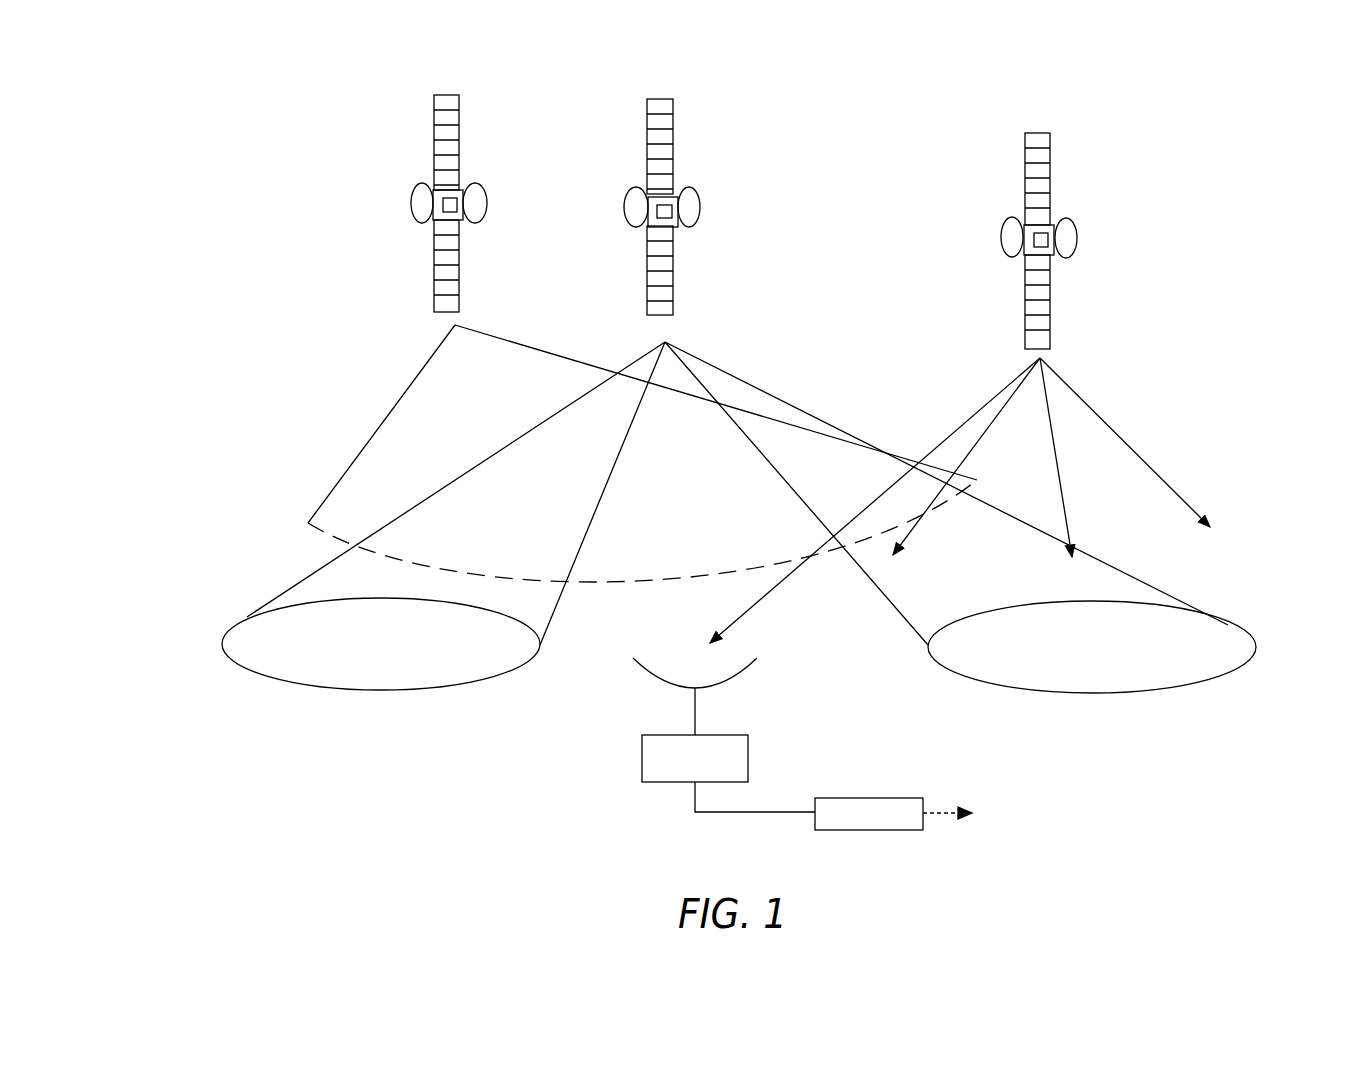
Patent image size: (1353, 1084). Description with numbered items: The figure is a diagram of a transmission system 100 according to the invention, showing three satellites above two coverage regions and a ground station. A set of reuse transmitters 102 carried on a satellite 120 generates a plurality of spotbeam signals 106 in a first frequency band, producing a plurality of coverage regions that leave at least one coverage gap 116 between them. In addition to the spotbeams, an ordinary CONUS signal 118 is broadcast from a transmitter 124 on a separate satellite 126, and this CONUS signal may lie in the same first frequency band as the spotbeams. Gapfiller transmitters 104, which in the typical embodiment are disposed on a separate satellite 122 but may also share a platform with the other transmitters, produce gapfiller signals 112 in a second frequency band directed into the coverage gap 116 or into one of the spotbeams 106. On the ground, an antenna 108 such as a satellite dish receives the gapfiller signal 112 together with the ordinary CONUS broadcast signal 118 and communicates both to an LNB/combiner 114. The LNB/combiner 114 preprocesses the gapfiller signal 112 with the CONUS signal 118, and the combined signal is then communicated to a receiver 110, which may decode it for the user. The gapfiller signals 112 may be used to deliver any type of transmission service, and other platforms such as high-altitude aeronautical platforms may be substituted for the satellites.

The transmission system 100 is at (1146, 150).
The reuse transmitters 102 is at (674, 194).
The gapfiller transmitters 104 is at (1035, 230).
The spotbeam signals 106 is at (222, 644).
The antenna 108 is at (733, 678).
The receiver 110 is at (908, 798).
The gapfiller signals 112 is at (990, 402).
The LNB/combiner 114 is at (642, 755).
The coverage gap 116 is at (808, 636).
The CONUS signal 118 is at (388, 413).
The satellite 120 is at (700, 205).
The separate satellite 122 is at (1078, 237).
The transmitter 124 is at (457, 192).
The separate satellite 126 is at (420, 188).